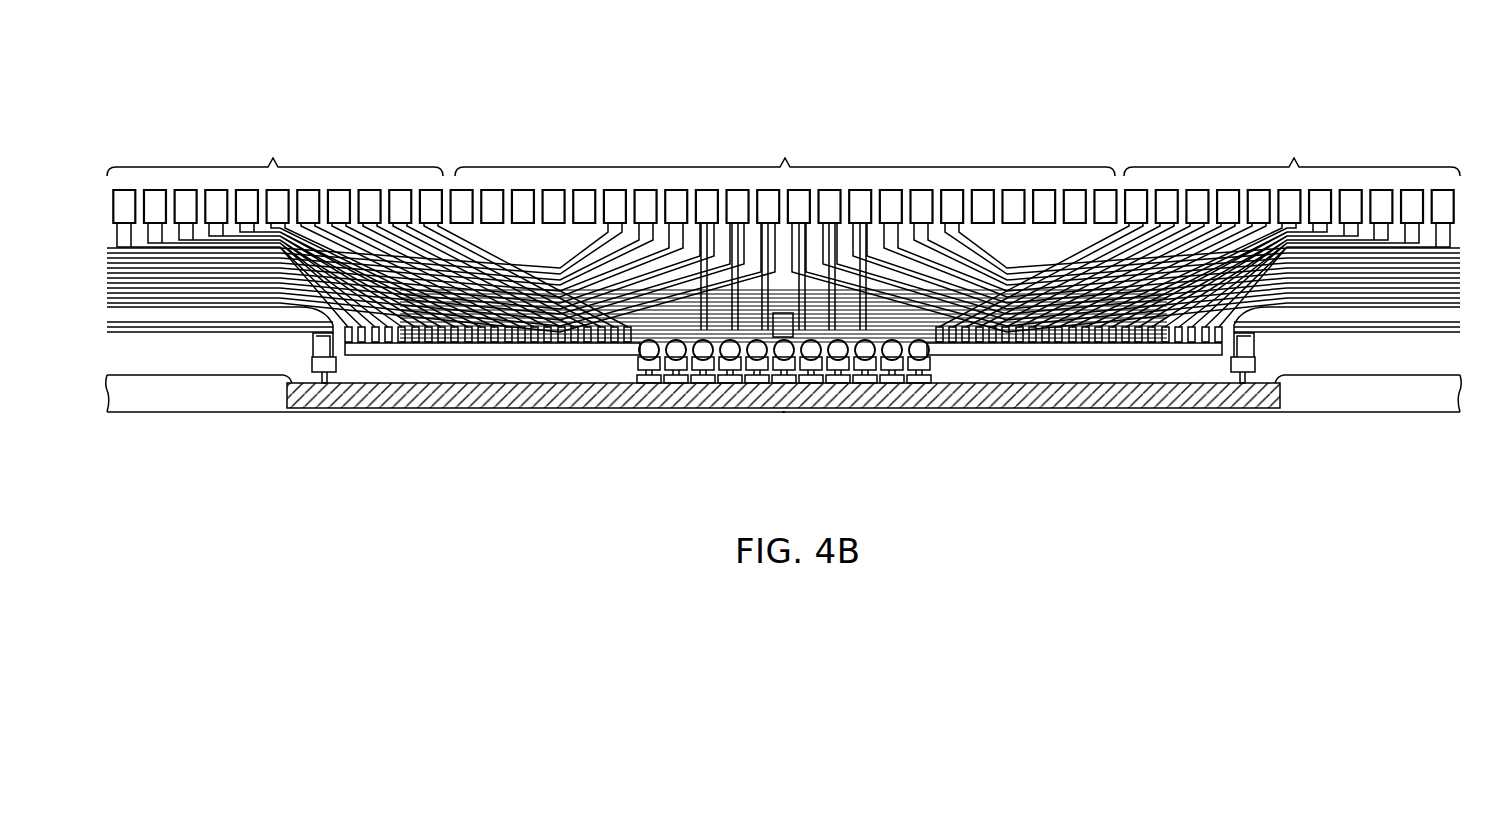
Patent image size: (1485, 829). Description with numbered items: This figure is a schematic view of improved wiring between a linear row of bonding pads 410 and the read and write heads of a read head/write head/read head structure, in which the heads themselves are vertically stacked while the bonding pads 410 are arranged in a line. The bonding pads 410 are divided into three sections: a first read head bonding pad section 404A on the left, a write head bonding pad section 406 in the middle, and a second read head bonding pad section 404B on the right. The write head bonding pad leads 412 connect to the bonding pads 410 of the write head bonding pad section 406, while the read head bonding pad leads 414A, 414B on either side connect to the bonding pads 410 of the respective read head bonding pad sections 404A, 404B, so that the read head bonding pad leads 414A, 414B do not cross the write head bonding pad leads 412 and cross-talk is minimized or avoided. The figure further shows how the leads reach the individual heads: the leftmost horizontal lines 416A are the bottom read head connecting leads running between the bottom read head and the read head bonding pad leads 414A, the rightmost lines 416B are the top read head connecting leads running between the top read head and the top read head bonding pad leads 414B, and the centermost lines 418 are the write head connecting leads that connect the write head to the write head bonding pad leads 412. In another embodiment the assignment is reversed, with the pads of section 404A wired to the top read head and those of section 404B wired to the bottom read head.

The first read head bonding pad section 404A is at (367, 190).
The second read head bonding pad section 404B is at (1199, 189).
The write head bonding pad section 406 is at (783, 195).
The bonding pads 410 is at (1009, 203).
The write head bonding pad leads 412 is at (713, 227).
The read head bonding pad leads 414A is at (500, 337).
The read head bonding pad leads 414B is at (1067, 337).
The bottom read head connecting leads 416A is at (537, 352).
The top read head connecting leads 416B is at (1030, 352).
The write head connecting leads 418 is at (918, 262).